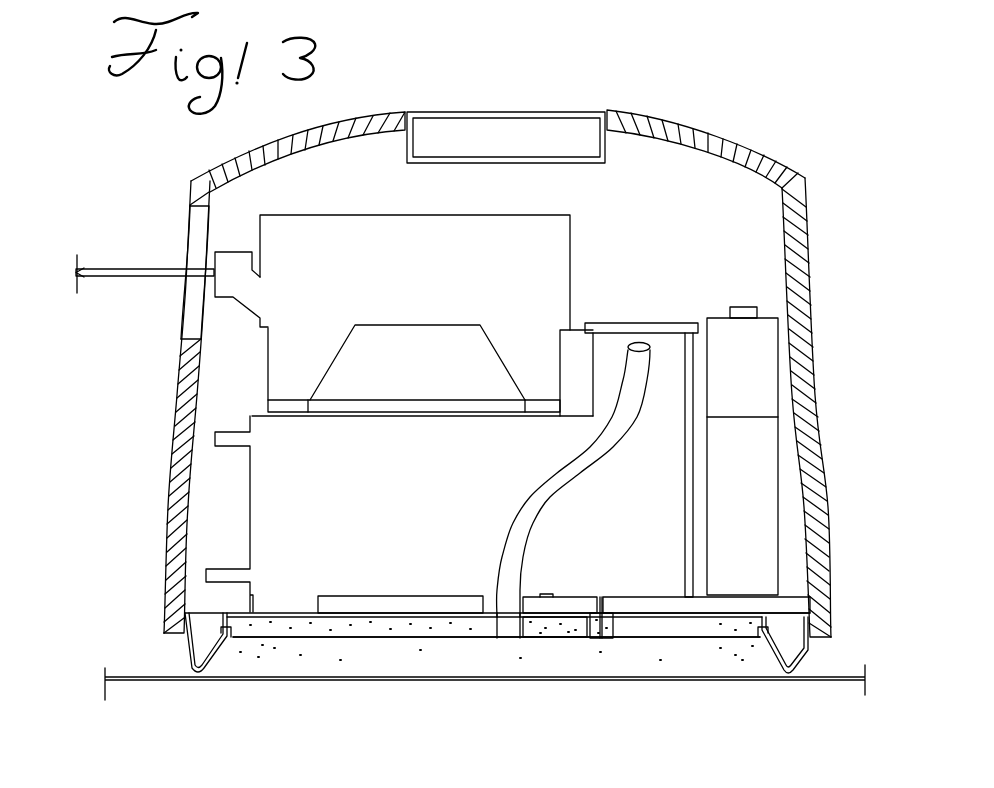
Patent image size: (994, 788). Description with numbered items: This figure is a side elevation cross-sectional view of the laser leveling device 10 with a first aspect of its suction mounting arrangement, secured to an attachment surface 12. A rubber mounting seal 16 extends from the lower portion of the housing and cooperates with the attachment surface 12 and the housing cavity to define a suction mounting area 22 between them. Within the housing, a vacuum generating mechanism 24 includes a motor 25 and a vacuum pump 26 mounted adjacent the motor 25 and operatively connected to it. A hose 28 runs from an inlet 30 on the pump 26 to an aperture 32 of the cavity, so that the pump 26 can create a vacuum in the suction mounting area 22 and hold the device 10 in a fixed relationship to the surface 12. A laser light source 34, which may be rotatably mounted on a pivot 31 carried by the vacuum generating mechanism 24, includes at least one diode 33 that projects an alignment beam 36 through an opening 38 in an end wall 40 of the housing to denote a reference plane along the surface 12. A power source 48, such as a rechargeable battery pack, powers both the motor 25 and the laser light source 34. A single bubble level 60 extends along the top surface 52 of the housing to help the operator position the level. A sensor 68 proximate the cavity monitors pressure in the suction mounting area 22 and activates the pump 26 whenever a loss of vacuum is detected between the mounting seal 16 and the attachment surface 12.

The laser leveling device 10 is at (458, 358).
The attachment surface 12 is at (161, 693).
The mounting seal 16 is at (185, 660).
The suction mounting area 22 is at (380, 653).
The vacuum generating mechanism 24 is at (237, 549).
The motor 25 is at (328, 554).
The vacuum pump 26 is at (618, 323).
The hose 28 is at (502, 573).
The inlet 30 is at (640, 343).
The pivot 31 is at (265, 403).
The aperture 32 is at (490, 627).
The diode 33 is at (232, 256).
The laser light source 34 is at (394, 239).
The alignment beam 36 is at (78, 270).
The opening 38 is at (190, 312).
The end wall 40 is at (175, 465).
The power source 48 is at (746, 508).
The top surface 52 is at (666, 122).
The bubble level 60 is at (486, 146).
The sensor 68 is at (600, 626).